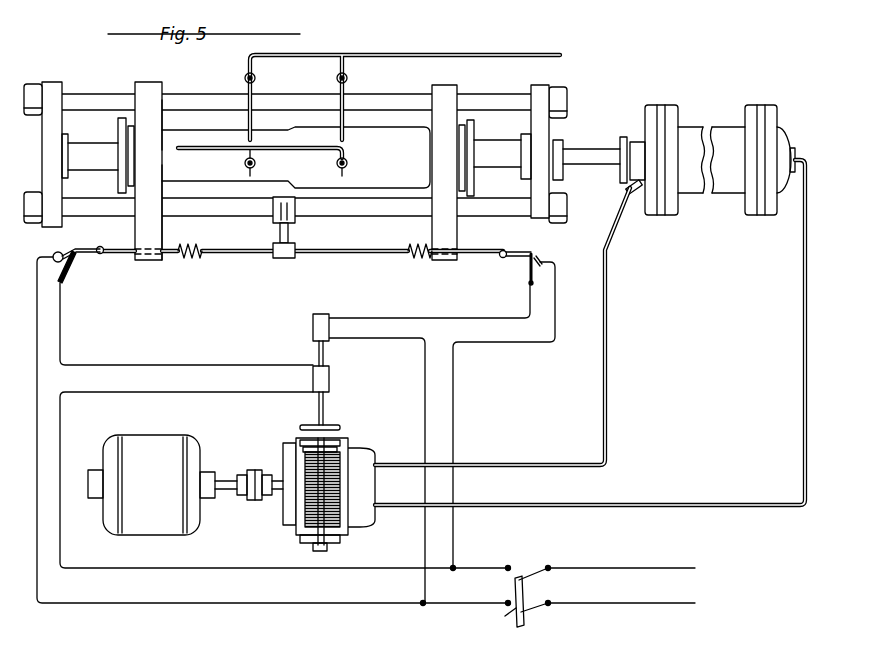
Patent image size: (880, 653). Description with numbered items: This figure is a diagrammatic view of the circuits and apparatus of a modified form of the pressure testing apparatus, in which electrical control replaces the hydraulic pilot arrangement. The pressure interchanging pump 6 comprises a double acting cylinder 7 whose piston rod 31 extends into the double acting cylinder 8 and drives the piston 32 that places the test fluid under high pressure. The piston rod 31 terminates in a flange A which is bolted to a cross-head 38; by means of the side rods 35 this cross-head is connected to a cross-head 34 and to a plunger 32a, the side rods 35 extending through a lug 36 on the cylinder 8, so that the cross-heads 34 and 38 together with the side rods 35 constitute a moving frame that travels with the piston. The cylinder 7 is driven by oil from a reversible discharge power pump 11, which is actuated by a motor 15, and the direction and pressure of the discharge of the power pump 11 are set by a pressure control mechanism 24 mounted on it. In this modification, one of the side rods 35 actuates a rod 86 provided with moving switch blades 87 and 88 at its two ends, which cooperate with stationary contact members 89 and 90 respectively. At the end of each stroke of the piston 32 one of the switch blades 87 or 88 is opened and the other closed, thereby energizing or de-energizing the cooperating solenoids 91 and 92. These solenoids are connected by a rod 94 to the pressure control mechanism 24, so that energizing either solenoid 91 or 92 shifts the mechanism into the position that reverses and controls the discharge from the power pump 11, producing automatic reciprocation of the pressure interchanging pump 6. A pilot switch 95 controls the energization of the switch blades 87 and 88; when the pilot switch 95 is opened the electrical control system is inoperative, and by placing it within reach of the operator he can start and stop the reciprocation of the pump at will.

The pressure interchanging pump 6 is at (619, 93).
The double acting cylinder 7 is at (718, 130).
The double acting cylinder 8 is at (392, 128).
The reversible discharge power pump 11 is at (368, 488).
The motor 15 is at (196, 455).
The pressure control mechanism 24 is at (327, 478).
The piston rod 31 is at (596, 165).
The piston 32 is at (493, 150).
The plunger 32a is at (92, 163).
The cross-head 34 is at (47, 92).
The side rods 35 is at (190, 102).
The lug 36 is at (148, 96).
The cross-head 38 is at (162, 232).
The flange A is at (572, 144).
The rod 86 is at (335, 254).
The moving switch blade 87 is at (74, 268).
The moving switch blade 88 is at (527, 270).
The stationary contact member 89 is at (64, 253).
The stationary contact member 90 is at (541, 262).
The solenoid 91 is at (313, 322).
The solenoid 92 is at (313, 375).
The rod 94 is at (325, 412).
The pilot switch 95 is at (520, 578).